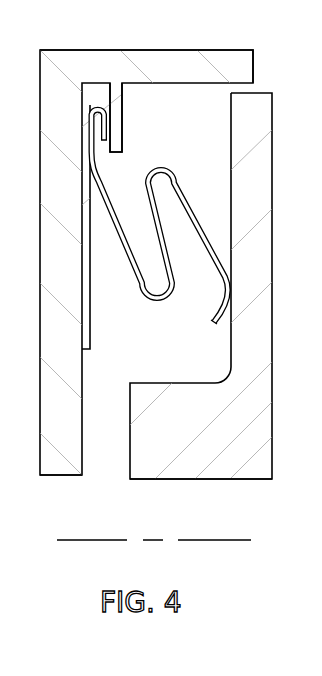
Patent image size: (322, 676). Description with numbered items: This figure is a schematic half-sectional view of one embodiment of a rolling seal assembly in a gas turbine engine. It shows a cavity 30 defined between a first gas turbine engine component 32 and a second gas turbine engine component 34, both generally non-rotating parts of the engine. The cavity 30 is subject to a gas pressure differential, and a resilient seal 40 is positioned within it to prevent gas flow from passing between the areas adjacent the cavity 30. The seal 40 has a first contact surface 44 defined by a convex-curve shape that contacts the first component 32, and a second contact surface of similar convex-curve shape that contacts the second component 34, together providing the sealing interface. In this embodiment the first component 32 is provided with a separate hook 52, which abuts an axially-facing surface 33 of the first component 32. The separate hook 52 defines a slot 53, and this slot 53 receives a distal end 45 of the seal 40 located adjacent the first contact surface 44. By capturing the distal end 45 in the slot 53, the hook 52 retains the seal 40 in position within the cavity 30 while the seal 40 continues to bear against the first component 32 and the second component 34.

The cavity 30 is at (208, 368).
The first gas turbine engine component 32 is at (183, 80).
The axially-facing surface 33 is at (90, 460).
The second gas turbine engine component 34 is at (247, 453).
The resilient seal 40 is at (178, 310).
The first contact surface 44 is at (94, 170).
The distal end 45 is at (102, 139).
The separate hook 52 is at (116, 128).
The slot 53 is at (109, 126).